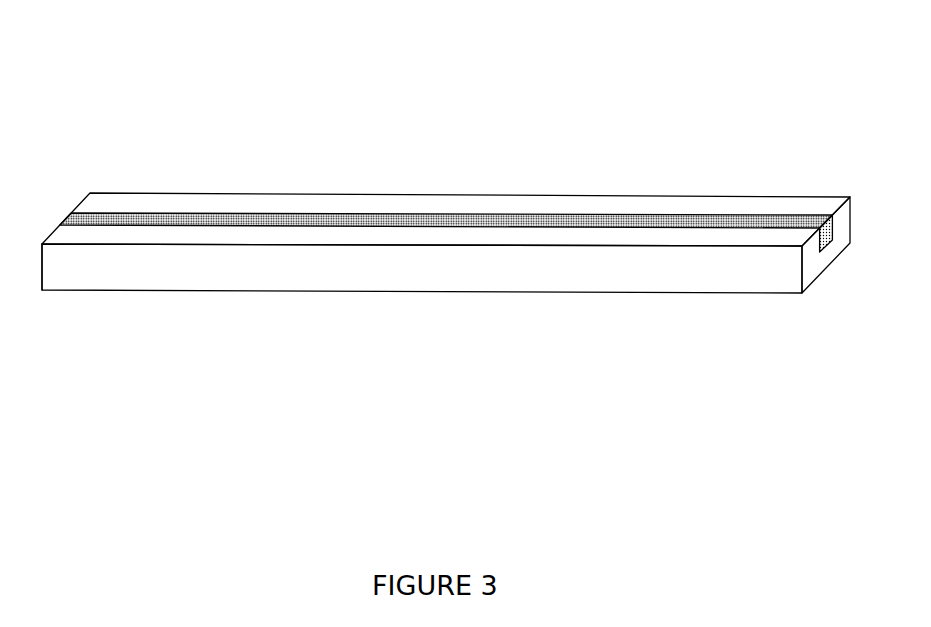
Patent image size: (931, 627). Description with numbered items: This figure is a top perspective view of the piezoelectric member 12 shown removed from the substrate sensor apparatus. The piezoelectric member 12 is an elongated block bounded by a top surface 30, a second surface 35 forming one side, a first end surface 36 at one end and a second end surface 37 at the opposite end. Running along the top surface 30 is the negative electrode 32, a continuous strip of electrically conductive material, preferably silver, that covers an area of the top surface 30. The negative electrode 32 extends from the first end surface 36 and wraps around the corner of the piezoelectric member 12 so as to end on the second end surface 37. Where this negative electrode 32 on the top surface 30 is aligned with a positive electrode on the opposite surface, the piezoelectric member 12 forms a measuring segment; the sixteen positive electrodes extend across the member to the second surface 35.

The piezoelectric member 12 is at (671, 99).
The top surface 30 is at (375, 200).
The negative electrode 32 is at (292, 218).
The second surface 35 is at (382, 273).
The first end surface 36 is at (42, 265).
The second end surface 37 is at (808, 262).